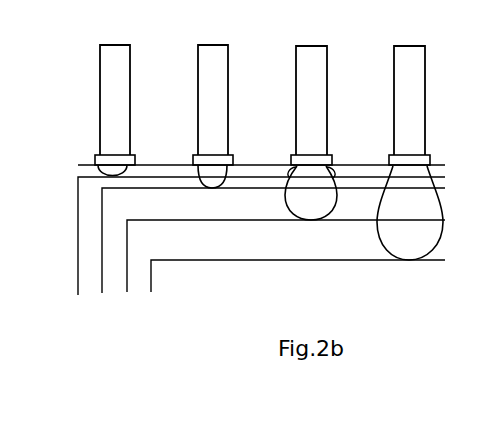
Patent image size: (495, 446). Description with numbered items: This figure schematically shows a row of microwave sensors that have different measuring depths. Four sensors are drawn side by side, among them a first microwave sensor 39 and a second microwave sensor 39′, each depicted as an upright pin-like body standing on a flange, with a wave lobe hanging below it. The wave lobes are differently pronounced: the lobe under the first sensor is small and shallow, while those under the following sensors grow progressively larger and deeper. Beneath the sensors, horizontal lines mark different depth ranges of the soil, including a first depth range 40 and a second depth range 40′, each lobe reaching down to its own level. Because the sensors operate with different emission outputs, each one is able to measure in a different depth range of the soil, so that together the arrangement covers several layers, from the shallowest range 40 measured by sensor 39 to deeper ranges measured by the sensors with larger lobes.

The microwave sensor 39 is at (130, 73).
The microwave sensor 39′ is at (229, 72).
The depth range of the soil 40 is at (78, 252).
The depth range of the soil 40′ is at (101, 288).